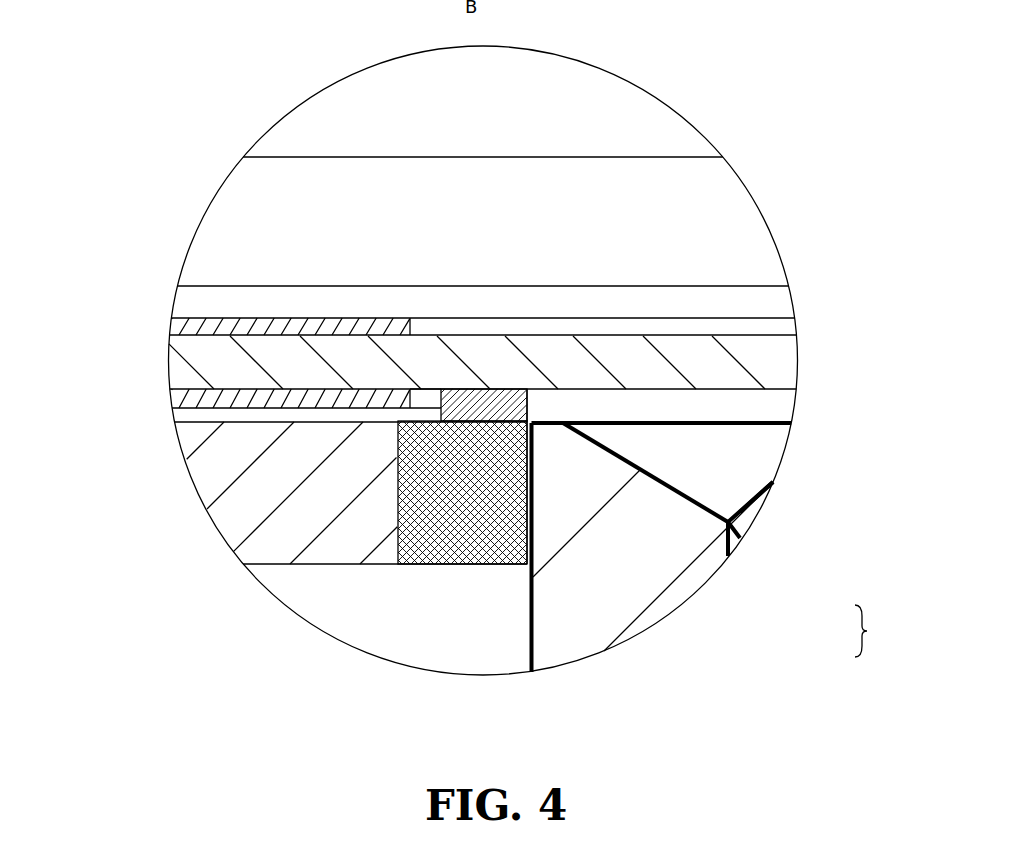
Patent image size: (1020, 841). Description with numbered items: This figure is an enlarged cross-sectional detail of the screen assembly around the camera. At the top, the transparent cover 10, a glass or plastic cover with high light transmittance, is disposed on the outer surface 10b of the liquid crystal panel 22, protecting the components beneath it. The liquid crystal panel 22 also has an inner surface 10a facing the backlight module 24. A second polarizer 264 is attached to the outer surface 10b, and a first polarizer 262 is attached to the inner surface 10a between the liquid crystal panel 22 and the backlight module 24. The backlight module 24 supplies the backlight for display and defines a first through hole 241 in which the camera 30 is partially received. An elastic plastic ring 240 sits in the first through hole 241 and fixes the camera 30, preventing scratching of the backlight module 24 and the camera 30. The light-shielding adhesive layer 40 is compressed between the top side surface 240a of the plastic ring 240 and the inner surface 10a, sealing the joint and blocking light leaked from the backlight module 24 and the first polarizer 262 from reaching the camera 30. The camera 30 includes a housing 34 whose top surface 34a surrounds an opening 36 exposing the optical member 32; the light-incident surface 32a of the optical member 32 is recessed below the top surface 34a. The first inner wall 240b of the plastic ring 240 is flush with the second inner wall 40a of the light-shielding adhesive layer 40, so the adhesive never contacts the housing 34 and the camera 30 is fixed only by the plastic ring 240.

The transparent cover 10 is at (280, 197).
The inner surface 10a is at (432, 391).
The outer surface 10b is at (393, 335).
The liquid crystal panel 22 is at (178, 372).
The backlight module 24 is at (227, 512).
The plastic ring 240 is at (453, 530).
The top side surface 240a is at (487, 417).
The first inner wall 240b is at (535, 500).
The first through hole 241 is at (527, 517).
The first polarizer 262 is at (177, 395).
The second polarizer 264 is at (170, 320).
The camera 30 is at (667, 592).
The optical member 32 is at (728, 566).
The light-incident surface 32a is at (758, 491).
The housing 34 is at (692, 544).
The top surface 34a is at (655, 421).
The opening 36 is at (707, 452).
The light-shielding adhesive layer 40 is at (458, 388).
The second inner wall 40a is at (529, 404).